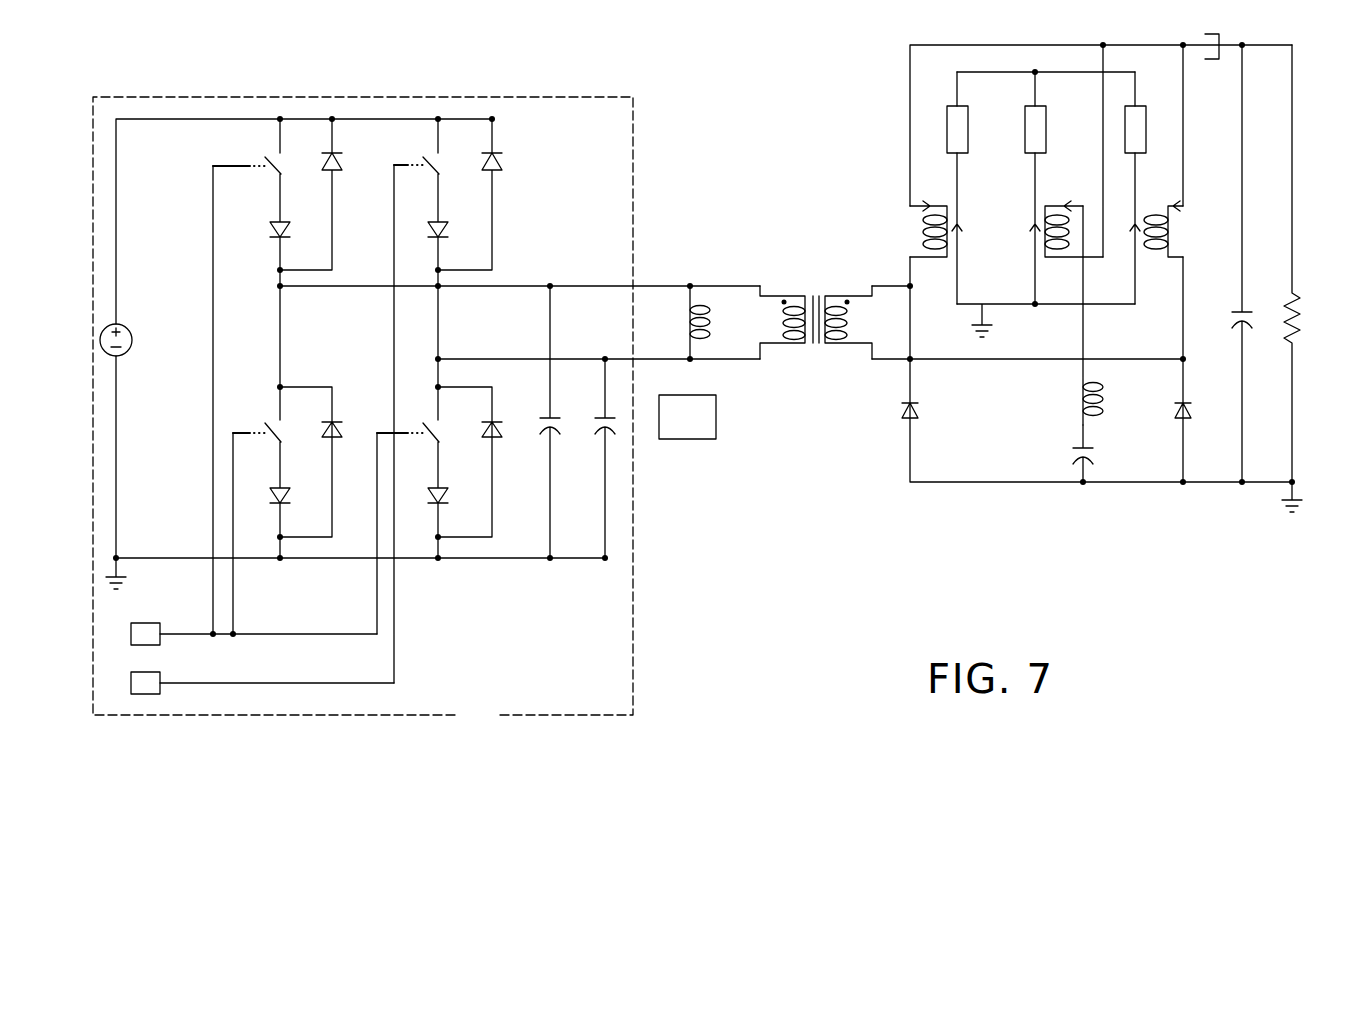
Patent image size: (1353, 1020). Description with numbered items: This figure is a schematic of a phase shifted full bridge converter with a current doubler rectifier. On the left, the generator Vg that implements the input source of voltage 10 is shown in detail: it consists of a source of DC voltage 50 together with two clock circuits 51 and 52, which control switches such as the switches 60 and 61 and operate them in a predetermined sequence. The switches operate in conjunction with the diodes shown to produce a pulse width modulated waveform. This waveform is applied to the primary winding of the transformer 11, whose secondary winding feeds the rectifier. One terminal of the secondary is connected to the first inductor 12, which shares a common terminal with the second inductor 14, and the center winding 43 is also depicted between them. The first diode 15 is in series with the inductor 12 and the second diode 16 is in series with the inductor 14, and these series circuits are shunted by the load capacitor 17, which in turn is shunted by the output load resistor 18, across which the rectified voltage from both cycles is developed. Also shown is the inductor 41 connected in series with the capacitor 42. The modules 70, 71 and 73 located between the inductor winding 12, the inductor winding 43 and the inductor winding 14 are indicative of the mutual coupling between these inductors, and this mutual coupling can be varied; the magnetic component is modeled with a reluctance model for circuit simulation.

The input source of voltage 10 is at (281, 96).
The transformer 11 is at (815, 356).
The first inductor 12 is at (917, 232).
The second inductor 14 is at (1172, 232).
The first diode 15 is at (903, 410).
The second diode 16 is at (1196, 410).
The load capacitor 17 is at (1235, 315).
The output load resistor 18 is at (1300, 320).
The inductor 41 is at (1065, 402).
The capacitor 42 is at (1097, 452).
The center winding 43 is at (1078, 210).
The source of DC voltage 50 is at (133, 340).
The clock circuit 51 is at (157, 622).
The clock circuit 52 is at (157, 672).
The switch 60 is at (286, 163).
The switch 61 is at (444, 163).
The module 70 is at (950, 122).
The module 71 is at (1028, 127).
The module 73 is at (1142, 117).